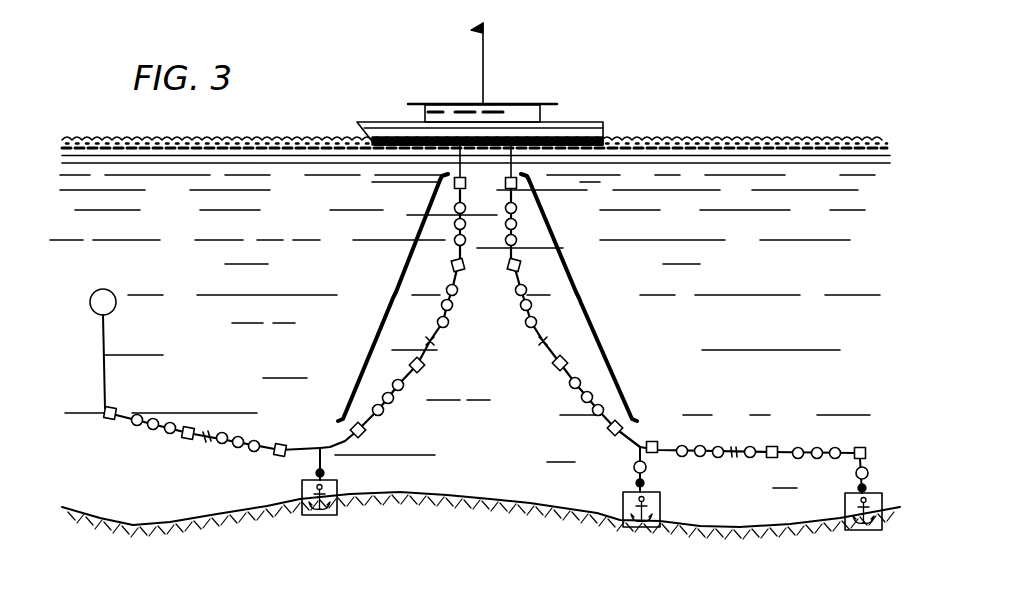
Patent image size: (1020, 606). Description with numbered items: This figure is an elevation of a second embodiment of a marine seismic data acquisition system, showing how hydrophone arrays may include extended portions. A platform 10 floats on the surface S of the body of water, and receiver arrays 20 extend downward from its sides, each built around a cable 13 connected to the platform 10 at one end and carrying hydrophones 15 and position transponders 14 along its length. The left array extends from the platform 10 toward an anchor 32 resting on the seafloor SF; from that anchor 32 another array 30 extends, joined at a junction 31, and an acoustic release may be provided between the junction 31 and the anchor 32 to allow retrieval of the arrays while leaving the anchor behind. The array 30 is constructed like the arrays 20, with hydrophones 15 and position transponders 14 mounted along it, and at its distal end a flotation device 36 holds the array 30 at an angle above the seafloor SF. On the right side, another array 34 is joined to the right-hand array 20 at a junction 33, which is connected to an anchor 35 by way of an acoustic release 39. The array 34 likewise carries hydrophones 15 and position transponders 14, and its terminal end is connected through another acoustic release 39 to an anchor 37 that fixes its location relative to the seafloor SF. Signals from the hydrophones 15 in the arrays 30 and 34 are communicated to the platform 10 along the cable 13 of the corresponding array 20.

The platform 10 is at (592, 121).
The cable 13 is at (438, 343).
The position transponder 14 is at (512, 271).
The hydrophone 15 is at (595, 412).
The receiver array 20 is at (487, 297).
The array 30 is at (222, 409).
The junction 31 is at (318, 446).
The anchor 32 is at (314, 518).
The junction 33 is at (648, 443).
The array 34 is at (777, 422).
The anchor 35 is at (642, 532).
The flotation device 36 is at (100, 290).
The anchor 37 is at (866, 532).
The acoustic release 39 is at (867, 463).
The surface S is at (322, 138).
The seafloor SF is at (463, 497).